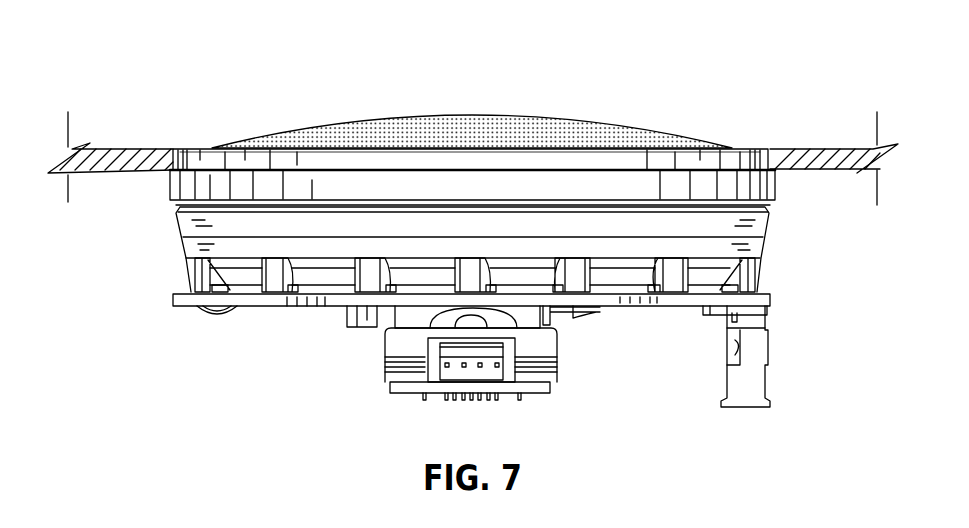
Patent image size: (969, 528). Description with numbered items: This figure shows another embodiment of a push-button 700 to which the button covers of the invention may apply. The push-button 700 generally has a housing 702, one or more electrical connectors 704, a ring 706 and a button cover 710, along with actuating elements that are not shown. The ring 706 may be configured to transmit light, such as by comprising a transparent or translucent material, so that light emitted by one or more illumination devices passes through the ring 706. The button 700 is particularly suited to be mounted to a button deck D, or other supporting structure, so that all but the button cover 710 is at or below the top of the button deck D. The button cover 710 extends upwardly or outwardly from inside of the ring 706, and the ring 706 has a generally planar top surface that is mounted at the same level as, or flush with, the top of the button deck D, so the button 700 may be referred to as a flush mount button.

The push-button 700 is at (730, 97).
The housing 702 is at (763, 227).
The electrical connector 704 is at (503, 382).
The ring 706 is at (750, 148).
The button cover 710 is at (527, 120).
The button deck D is at (827, 157).